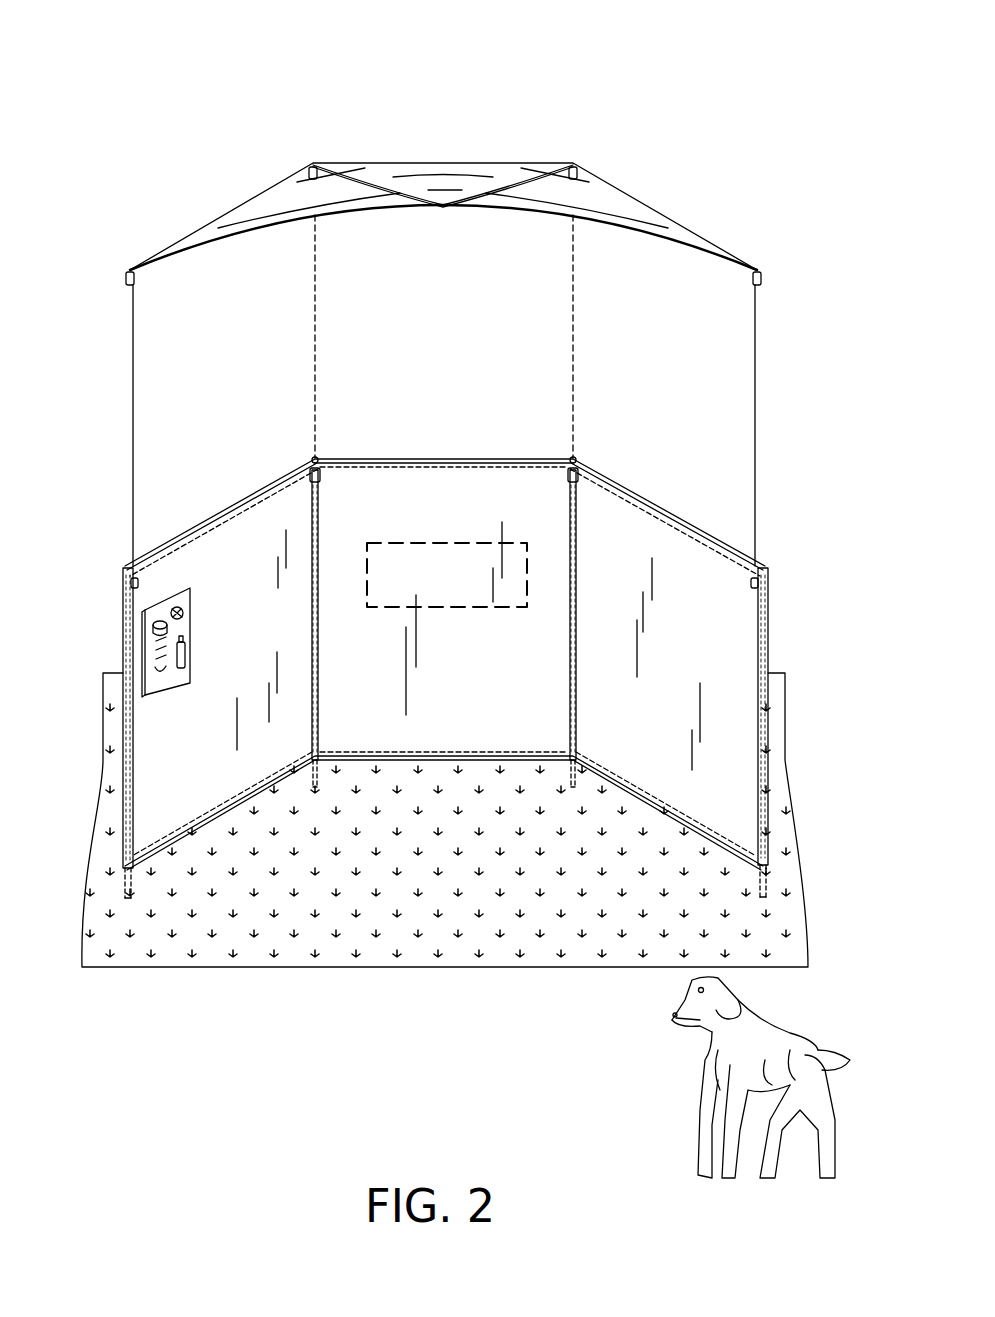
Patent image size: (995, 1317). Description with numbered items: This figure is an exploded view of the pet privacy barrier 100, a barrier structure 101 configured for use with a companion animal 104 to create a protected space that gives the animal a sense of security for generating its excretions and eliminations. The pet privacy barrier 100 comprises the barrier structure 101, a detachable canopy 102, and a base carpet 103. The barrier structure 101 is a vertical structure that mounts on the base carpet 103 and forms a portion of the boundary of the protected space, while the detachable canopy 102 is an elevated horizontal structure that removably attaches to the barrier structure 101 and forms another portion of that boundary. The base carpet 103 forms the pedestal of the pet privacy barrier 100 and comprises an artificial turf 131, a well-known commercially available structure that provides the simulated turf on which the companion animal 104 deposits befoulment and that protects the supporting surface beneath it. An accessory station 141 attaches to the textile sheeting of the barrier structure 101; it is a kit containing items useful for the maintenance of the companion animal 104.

The pet privacy barrier 100 is at (120, 126).
The barrier structure 101 is at (768, 650).
The detachable canopy 102 is at (648, 225).
The base carpet 103 is at (465, 967).
The companion animal 104 is at (800, 1050).
The artificial turf 131 is at (335, 930).
The accessory station 141 is at (190, 620).